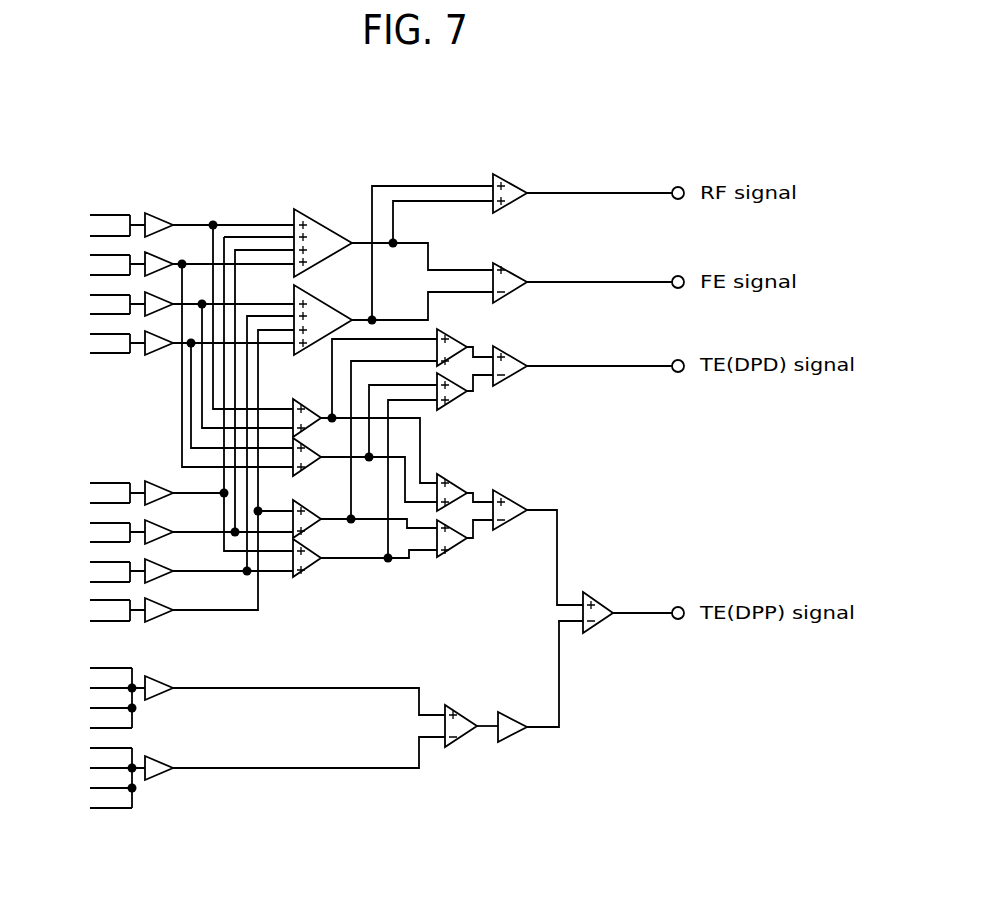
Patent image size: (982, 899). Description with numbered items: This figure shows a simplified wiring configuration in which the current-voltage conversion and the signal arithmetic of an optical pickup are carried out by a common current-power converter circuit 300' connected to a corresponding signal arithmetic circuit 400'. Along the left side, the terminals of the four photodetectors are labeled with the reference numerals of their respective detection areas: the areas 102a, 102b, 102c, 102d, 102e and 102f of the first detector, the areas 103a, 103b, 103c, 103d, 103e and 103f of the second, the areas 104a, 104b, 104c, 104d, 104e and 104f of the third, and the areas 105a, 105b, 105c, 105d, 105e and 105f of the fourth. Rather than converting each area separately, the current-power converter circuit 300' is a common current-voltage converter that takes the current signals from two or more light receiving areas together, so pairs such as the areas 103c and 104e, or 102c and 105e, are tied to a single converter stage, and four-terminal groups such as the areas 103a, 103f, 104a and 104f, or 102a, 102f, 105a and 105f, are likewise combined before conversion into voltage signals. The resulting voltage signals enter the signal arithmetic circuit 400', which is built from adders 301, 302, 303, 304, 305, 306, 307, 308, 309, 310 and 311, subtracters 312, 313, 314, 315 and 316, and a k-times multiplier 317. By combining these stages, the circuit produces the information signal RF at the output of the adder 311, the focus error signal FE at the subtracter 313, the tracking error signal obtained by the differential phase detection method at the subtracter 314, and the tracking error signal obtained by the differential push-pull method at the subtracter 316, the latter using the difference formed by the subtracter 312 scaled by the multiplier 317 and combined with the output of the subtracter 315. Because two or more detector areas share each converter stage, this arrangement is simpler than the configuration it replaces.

The current-power converter circuit 300' is at (178, 490).
The signal arithmetic circuit 400' is at (309, 777).
The adder 301 is at (320, 224).
The adder 302 is at (321, 301).
The adder 303 is at (295, 400).
The adder 304 is at (303, 445).
The adder 305 is at (303, 507).
The adder 306 is at (303, 546).
The adder 307 is at (448, 336).
The adder 308 is at (448, 380).
The adder 309 is at (448, 481).
The adder 310 is at (448, 525).
The adder 311 is at (506, 181).
The subtracter 312 is at (452, 709).
The subtracter 313 is at (506, 270).
The subtracter 314 is at (504, 352).
The subtracter 315 is at (504, 498).
The subtracter 316 is at (595, 600).
The k-times multiplier 317 is at (510, 718).
The detection area 102a is at (89, 747).
The detection area 102b is at (88, 561).
The detection area 102c is at (88, 482).
The detection area 102d is at (88, 522).
The detection area 102e is at (88, 599).
The detection area 102f is at (89, 767).
The detection area 103a is at (89, 667).
The detection area 103b is at (88, 294).
The detection area 103c is at (88, 214).
The detection area 103d is at (88, 254).
The detection area 103e is at (88, 333).
The detection area 103f is at (89, 687).
The detection area 104a is at (89, 707).
The detection area 104b is at (88, 274).
The detection area 104c is at (88, 352).
The detection area 104d is at (88, 313).
The detection area 104e is at (88, 235).
The detection area 104f is at (89, 727).
The detection area 105a is at (89, 787).
The detection area 105b is at (88, 541).
The detection area 105c is at (88, 620).
The detection area 105d is at (88, 581).
The detection area 105e is at (88, 502).
The detection area 105f is at (89, 807).